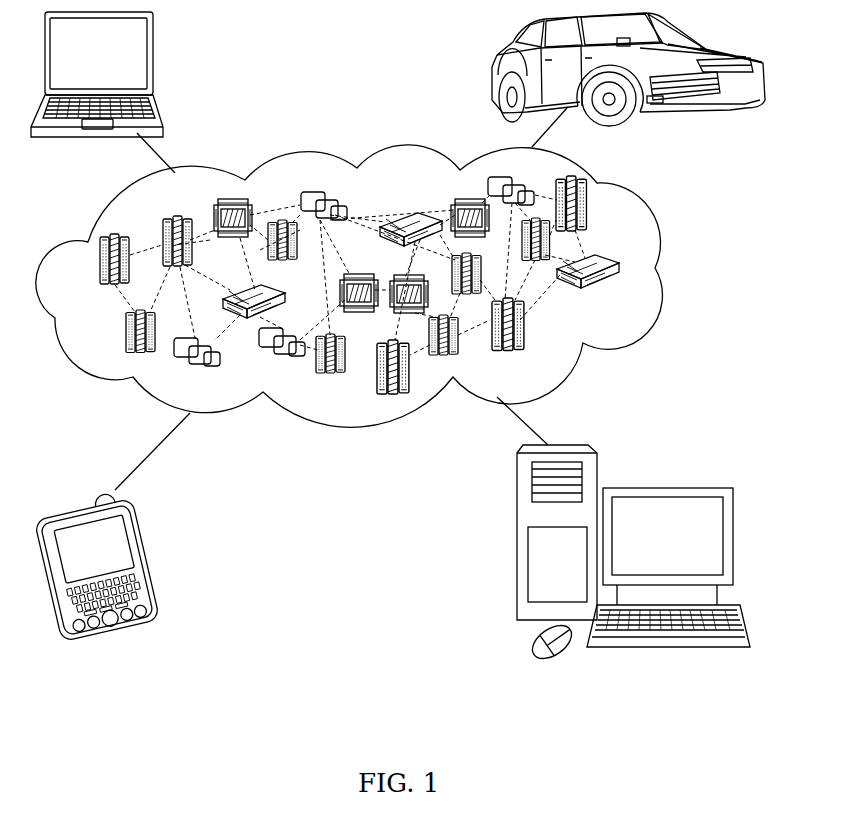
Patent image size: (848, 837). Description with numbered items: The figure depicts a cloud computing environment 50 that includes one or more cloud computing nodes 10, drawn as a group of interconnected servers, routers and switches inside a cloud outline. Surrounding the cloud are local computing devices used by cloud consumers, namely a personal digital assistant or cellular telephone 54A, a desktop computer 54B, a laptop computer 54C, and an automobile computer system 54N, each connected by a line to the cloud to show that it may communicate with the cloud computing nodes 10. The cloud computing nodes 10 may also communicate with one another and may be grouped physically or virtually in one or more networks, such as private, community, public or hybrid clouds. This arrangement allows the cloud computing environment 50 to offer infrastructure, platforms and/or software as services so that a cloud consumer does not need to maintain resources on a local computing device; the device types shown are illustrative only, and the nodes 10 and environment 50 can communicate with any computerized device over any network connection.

The cloud computing node 10 is at (620, 292).
The cloud computing environment 50 is at (663, 268).
The personal digital assistant or cellular telephone 54A is at (143, 560).
The desktop computer 54B is at (663, 487).
The laptop computer 54C is at (153, 61).
The automobile computer system 54N is at (492, 72).